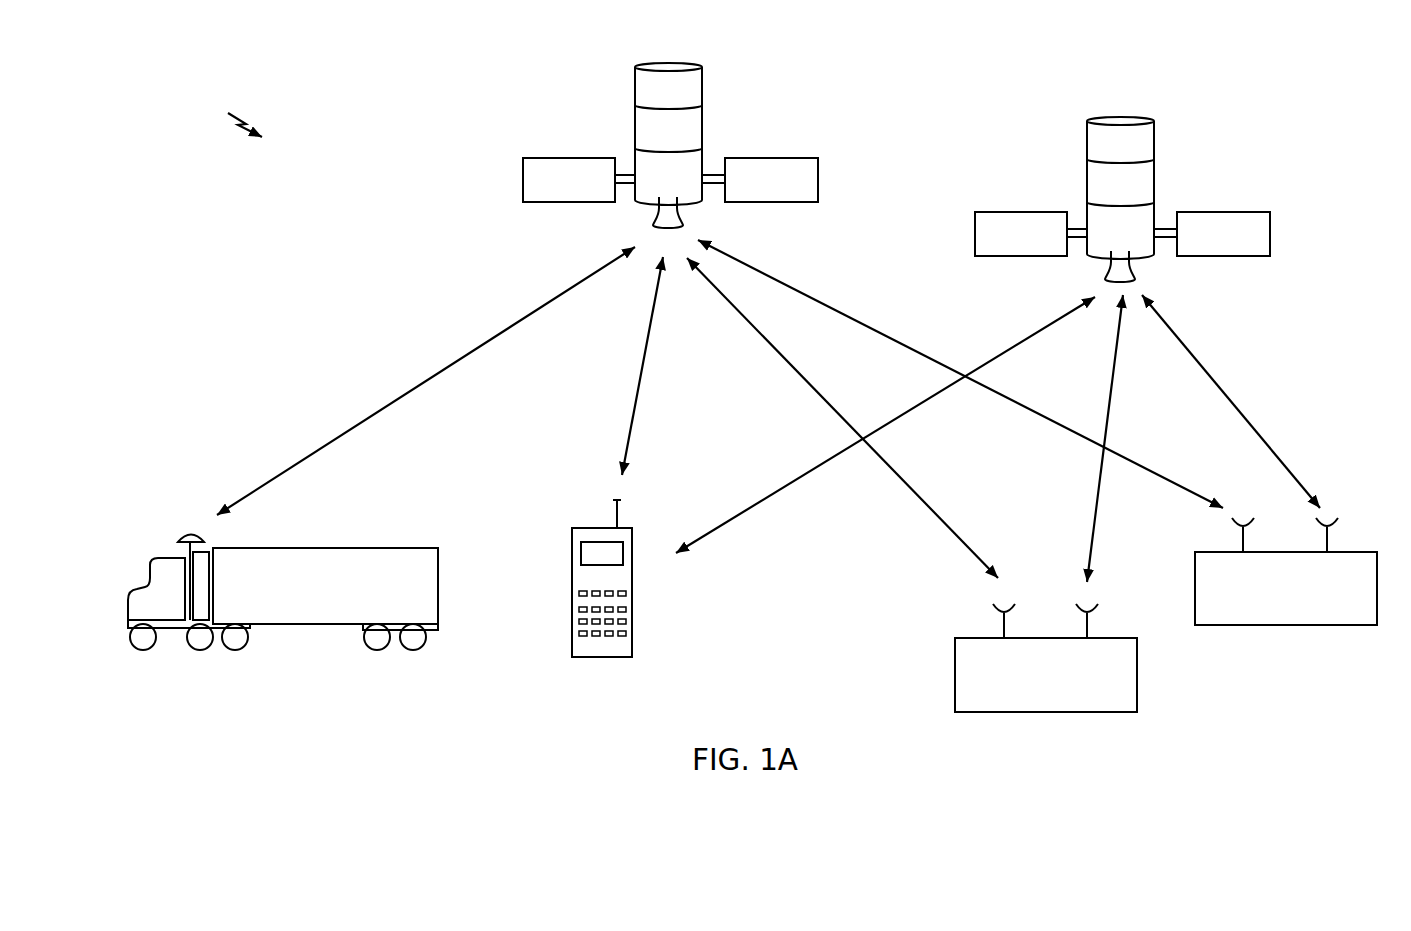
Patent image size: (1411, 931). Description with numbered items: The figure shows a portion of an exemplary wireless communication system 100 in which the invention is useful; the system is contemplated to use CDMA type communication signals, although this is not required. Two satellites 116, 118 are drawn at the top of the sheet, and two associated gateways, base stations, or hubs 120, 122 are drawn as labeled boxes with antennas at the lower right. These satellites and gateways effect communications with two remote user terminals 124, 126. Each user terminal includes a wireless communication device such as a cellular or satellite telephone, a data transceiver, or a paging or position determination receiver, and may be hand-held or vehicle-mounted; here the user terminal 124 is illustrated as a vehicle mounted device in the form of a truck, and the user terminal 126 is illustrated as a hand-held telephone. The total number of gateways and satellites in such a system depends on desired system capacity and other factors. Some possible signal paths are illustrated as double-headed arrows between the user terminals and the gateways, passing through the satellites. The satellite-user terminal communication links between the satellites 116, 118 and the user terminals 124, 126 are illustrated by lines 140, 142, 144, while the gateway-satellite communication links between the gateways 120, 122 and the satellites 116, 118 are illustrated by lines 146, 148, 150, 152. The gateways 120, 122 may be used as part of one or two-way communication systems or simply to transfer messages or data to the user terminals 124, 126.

The communication system 100 is at (227, 113).
The satellite 116 is at (666, 63).
The satellite 118 is at (1115, 117).
The gateway 120 is at (1115, 638).
The gateway 122 is at (1355, 552).
The user terminal 124 is at (390, 548).
The user terminal 126 is at (610, 657).
The satellite-user terminal communication link 140 is at (516, 322).
The satellite-user terminal communication link 142 is at (647, 357).
The satellite-user terminal communication link 144 is at (777, 490).
The gateway-satellite communication link 146 is at (810, 380).
The gateway-satellite communication link 148 is at (835, 305).
The gateway-satellite communication link 150 is at (1114, 381).
The gateway-satellite communication link 152 is at (1200, 360).